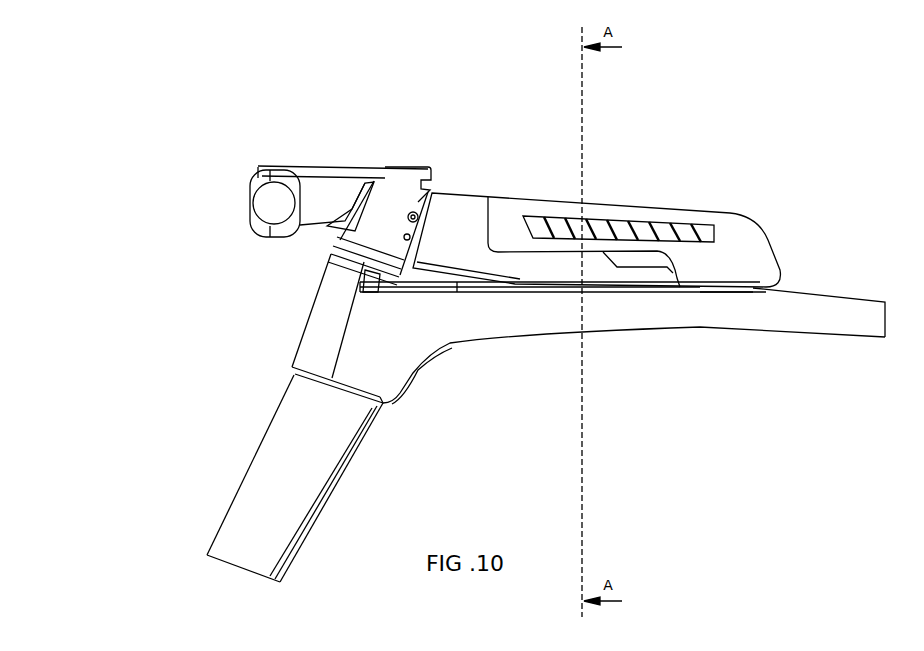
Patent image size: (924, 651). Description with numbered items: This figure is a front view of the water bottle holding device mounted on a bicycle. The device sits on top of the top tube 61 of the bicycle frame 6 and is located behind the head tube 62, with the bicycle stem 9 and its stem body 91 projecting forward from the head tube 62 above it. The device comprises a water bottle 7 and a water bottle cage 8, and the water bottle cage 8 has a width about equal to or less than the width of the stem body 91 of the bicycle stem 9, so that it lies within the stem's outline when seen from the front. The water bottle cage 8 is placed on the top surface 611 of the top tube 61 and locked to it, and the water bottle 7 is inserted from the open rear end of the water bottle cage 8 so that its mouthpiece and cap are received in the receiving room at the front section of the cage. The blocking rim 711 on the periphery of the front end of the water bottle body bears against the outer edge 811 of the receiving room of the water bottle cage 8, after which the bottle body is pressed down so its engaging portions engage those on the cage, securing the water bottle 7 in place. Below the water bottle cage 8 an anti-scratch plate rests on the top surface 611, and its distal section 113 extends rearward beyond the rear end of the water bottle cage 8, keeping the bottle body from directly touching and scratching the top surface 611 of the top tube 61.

The bicycle frame 6 is at (318, 343).
The top tube 61 is at (629, 327).
The top surface 611 is at (847, 297).
The head tube 62 is at (398, 185).
The water bottle 7 is at (623, 184).
The blocking rim 711 is at (584, 184).
The outer edge 811 is at (490, 203).
The water bottle cage 8 is at (596, 247).
The bicycle stem 9 is at (250, 226).
The stem body 91 is at (352, 166).
The distal section 113 is at (762, 295).